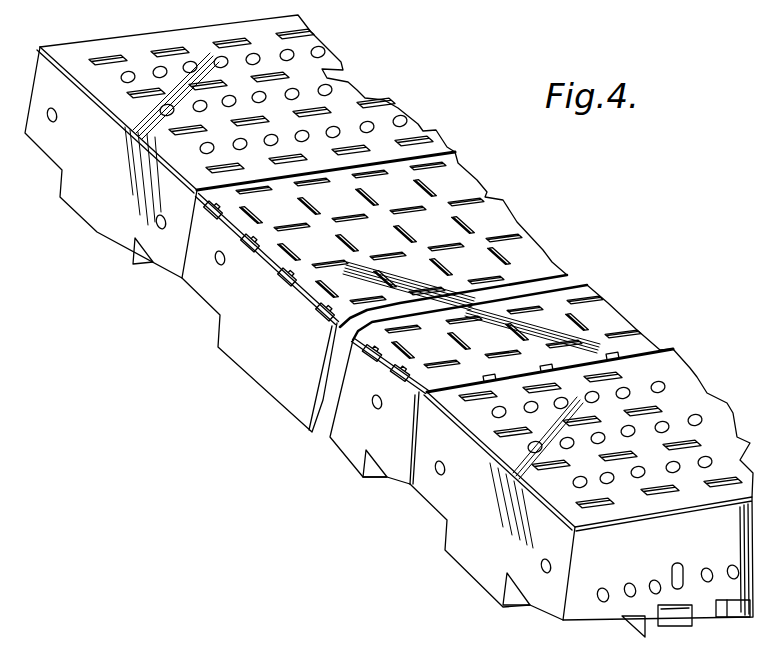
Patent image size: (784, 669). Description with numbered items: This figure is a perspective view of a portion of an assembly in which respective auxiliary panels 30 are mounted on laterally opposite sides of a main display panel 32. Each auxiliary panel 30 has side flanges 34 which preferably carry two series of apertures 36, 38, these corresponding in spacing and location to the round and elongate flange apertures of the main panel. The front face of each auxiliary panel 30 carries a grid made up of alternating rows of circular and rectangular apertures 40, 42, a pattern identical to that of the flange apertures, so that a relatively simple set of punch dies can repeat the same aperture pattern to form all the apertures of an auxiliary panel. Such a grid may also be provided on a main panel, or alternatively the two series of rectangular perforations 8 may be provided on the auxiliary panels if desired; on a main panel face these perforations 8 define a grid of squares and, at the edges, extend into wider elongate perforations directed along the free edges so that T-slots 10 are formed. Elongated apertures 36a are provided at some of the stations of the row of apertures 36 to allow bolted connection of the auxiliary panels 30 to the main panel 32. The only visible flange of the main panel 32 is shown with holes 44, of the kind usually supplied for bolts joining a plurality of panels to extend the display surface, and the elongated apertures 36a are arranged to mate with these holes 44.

The rectangular perforations 8 is at (462, 236).
The T-slots 10 is at (290, 284).
The auxiliary panel 30 is at (389, 339).
The main display panel 32 is at (287, 362).
The side flange 34 is at (658, 580).
The flange apertures 36 is at (723, 611).
The elongated apertures 36a is at (682, 570).
The flange apertures 38 is at (675, 618).
The circular apertures 40 is at (322, 53).
The rectangular apertures 42 is at (277, 80).
The holes 44 is at (220, 262).